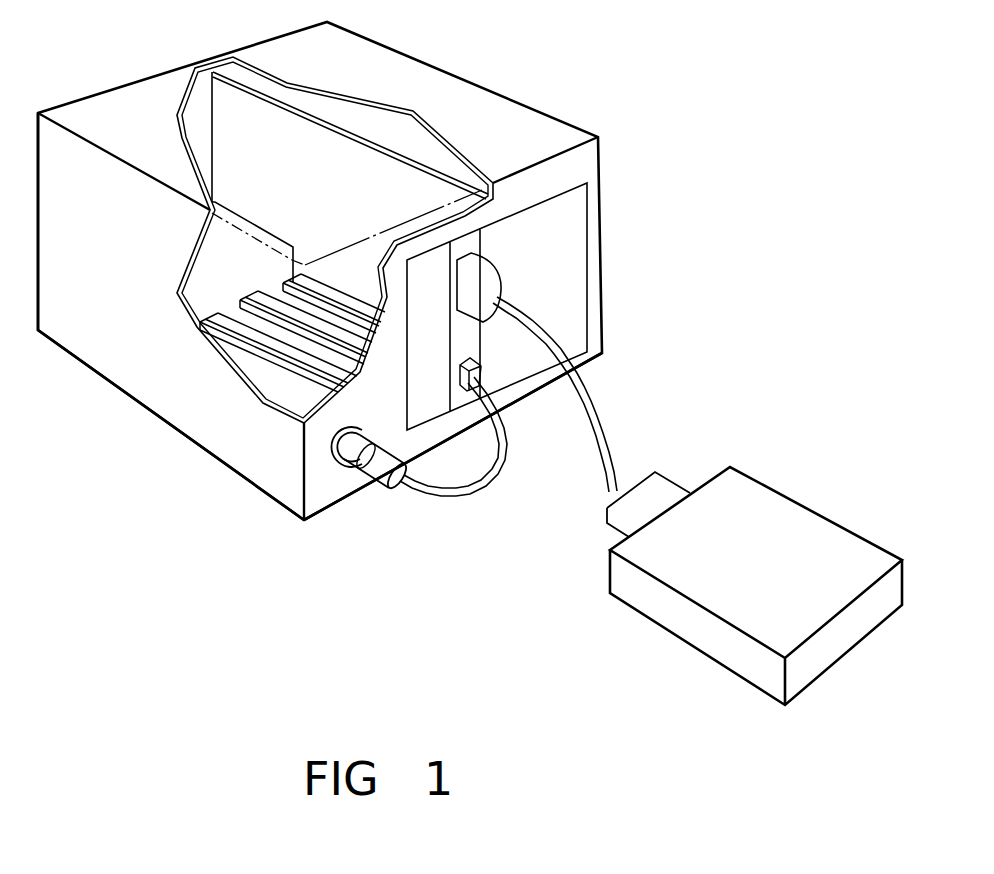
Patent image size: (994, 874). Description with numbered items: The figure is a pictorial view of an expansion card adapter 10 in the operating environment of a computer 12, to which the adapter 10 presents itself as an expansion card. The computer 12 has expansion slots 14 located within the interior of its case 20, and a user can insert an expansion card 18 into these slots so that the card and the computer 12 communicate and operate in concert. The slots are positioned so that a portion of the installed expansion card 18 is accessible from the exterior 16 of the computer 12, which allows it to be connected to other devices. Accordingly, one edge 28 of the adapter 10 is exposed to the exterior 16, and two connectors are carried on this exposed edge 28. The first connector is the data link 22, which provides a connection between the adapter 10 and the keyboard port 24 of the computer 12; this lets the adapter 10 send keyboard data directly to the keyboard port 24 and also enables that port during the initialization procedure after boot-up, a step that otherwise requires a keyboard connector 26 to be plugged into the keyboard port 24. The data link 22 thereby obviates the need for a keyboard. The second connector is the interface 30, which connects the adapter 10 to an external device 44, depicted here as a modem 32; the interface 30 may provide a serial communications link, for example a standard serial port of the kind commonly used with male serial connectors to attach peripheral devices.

The adapter 10 is at (328, 157).
The computer 12 is at (497, 103).
The expansion slots 14 is at (278, 362).
The exterior 16 is at (703, 317).
The expansion card 18 is at (262, 139).
The case 20 is at (137, 355).
The data link 22 is at (478, 490).
The keyboard port 24 is at (343, 450).
The keyboard connector 26 is at (378, 462).
The exposed edge 28 is at (467, 336).
The interface 30 is at (487, 268).
The modem 32 is at (760, 510).
The external device 44 is at (835, 507).